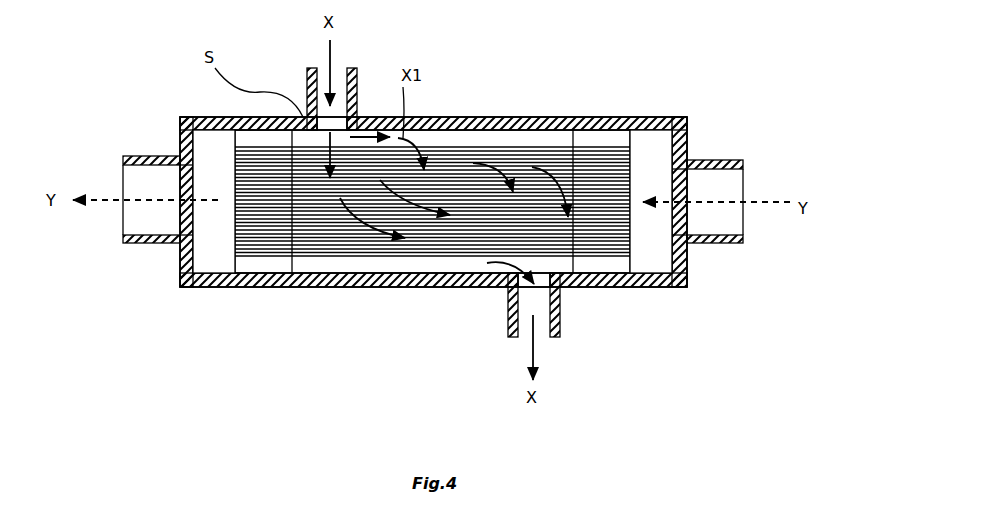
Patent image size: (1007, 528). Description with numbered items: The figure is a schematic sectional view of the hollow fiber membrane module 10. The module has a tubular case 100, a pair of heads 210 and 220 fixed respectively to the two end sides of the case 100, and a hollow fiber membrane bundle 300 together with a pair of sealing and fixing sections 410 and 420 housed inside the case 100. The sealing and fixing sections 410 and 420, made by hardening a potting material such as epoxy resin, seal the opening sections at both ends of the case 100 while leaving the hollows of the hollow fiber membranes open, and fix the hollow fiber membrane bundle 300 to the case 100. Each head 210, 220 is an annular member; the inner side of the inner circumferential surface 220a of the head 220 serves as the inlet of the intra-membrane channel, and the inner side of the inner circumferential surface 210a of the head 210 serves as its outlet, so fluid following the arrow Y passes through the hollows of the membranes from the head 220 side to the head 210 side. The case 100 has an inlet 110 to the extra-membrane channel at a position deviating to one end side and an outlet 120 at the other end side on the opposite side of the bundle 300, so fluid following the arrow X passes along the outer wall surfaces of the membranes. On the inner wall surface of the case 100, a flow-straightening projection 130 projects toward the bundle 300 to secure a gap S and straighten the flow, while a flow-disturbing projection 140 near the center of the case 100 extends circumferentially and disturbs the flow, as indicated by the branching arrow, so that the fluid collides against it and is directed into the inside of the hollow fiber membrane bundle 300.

The hollow fiber membrane module 10 is at (755, 88).
The tubular case 100 is at (492, 108).
The inlet 110 is at (342, 85).
The outlet 120 is at (540, 315).
The flow-straightening projection 130 is at (483, 137).
The flow-disturbing projection 140 is at (437, 140).
The head 210 is at (178, 268).
The inner circumferential surface of the head 210a is at (140, 237).
The head 220 is at (690, 265).
The inner circumferential surface of the head 220a is at (735, 235).
The hollow fiber membrane bundle 300 is at (338, 248).
The sealing and fixing section 410 is at (268, 250).
The sealing and fixing section 420 is at (605, 255).